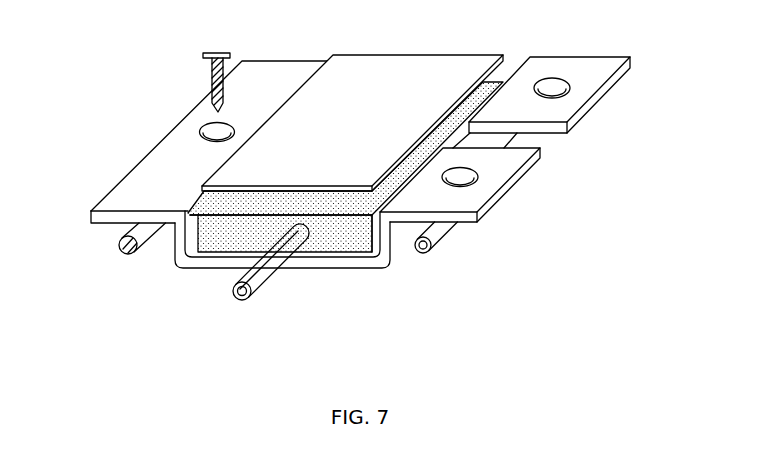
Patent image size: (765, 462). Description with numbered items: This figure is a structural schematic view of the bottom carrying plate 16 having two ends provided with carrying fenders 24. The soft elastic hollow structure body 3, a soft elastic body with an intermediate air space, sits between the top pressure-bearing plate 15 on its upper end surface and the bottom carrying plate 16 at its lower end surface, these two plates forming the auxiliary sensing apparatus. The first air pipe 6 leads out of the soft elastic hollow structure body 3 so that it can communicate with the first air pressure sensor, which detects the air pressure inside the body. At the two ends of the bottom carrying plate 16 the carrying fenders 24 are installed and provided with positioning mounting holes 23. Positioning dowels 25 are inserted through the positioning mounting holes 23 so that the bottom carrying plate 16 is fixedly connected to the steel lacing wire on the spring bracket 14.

The soft elastic hollow structure body 3 is at (340, 243).
The first air pipe 6 is at (267, 277).
The spring bracket 14 is at (429, 249).
The top pressure-bearing plate 15 is at (447, 60).
The bottom carrying plate 16 is at (212, 265).
The positioning mounting hole 23 is at (200, 136).
The carrying fender 24 is at (502, 178).
The positioning dowel 25 is at (212, 78).